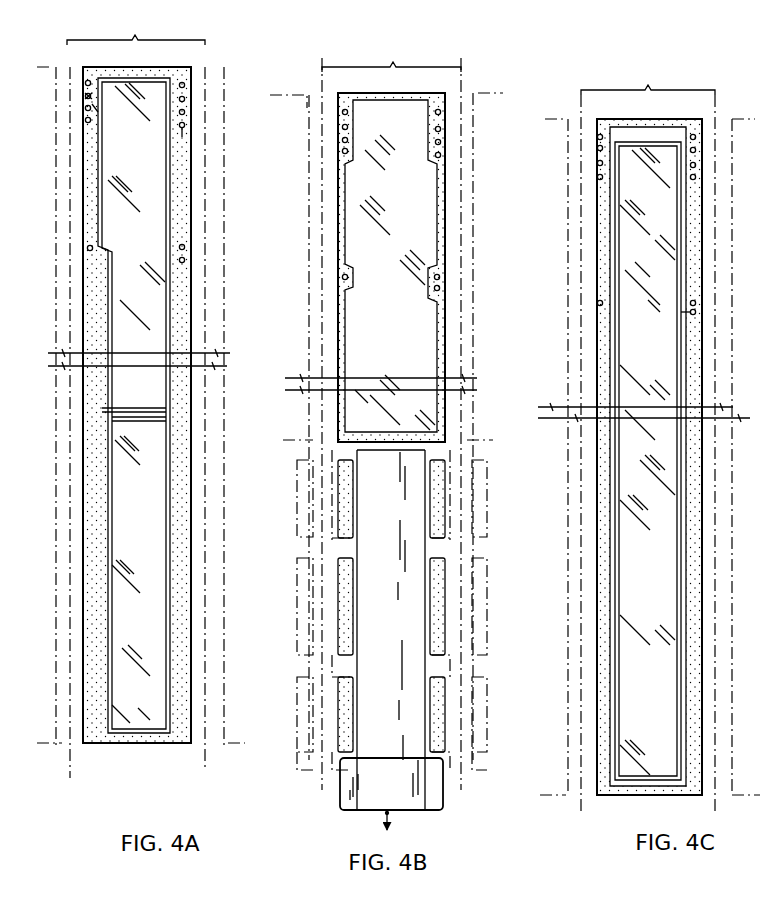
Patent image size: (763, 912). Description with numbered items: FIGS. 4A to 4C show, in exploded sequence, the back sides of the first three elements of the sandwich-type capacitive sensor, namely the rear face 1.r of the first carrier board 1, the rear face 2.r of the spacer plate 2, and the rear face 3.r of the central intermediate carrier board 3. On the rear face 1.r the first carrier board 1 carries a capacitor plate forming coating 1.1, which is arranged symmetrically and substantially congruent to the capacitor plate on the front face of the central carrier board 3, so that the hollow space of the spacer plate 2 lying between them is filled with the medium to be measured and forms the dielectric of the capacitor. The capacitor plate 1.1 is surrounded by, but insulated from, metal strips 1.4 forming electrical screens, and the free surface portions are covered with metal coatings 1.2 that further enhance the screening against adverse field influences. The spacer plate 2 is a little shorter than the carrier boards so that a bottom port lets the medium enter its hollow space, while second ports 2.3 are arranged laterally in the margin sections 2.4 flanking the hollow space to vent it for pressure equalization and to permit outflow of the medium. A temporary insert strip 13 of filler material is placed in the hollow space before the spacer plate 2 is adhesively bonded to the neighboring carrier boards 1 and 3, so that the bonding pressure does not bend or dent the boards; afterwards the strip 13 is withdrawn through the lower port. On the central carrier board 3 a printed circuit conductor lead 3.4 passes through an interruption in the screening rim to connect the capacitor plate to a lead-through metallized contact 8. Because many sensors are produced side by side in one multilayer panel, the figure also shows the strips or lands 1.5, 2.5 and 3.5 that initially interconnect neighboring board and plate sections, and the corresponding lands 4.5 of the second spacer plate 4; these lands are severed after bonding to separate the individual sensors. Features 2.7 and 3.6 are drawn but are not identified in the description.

In FIG. 4A, the first carrier board 1 is at (156, 749).
In FIG. 4A, the capacitor plate forming coating 1.1 is at (121, 630).
In FIG. 4A, the metal coatings 1.2 is at (149, 383).
In FIG. 4A, the metal strips 1.4 is at (104, 726).
In FIG. 4A, the strips or lands 1.5 is at (205, 731).
In FIG. 4A, the rear face of first carrier board 1.r is at (136, 24).
In FIG. 4A, the lead-through metallized contact 8 is at (92, 122).
In FIG. 4B, the lead-through metallized contact 8 is at (284, 127).
In FIG. 4C, the lead-through metallized contact 8 is at (697, 300).
In FIG. 4B, the spacer plate 2 is at (480, 764).
In FIG. 4B, the second ports 2.3 is at (342, 547).
In FIG. 4B, the margin areas or sections 2.4 is at (438, 512).
In FIG. 4B, the strips or lands 2.5 is at (318, 548).
In FIG. 4B, the glass pane of second panel 2.7 is at (409, 404).
In FIG. 4B, the rear face of spacer plate 2.r is at (391, 49).
In FIG. 4B, the temporary insert strips 13 is at (443, 794).
In FIG. 4C, the central intermediate carrier board 3 is at (701, 800).
In FIG. 4C, the printed circuit conductor lead 3.4 is at (692, 725).
In FIG. 4C, the strips or lands 3.5 is at (590, 786).
In FIG. 4C, the glass pane of third panel 3.6 is at (642, 483).
In FIG. 4C, the rear face of intermediate carrier board 3.r is at (648, 73).
In FIG. 4C, the spacer plate 4 is at (762, 352).
In FIG. 4C, the lands or strips 4.5 is at (747, 277).